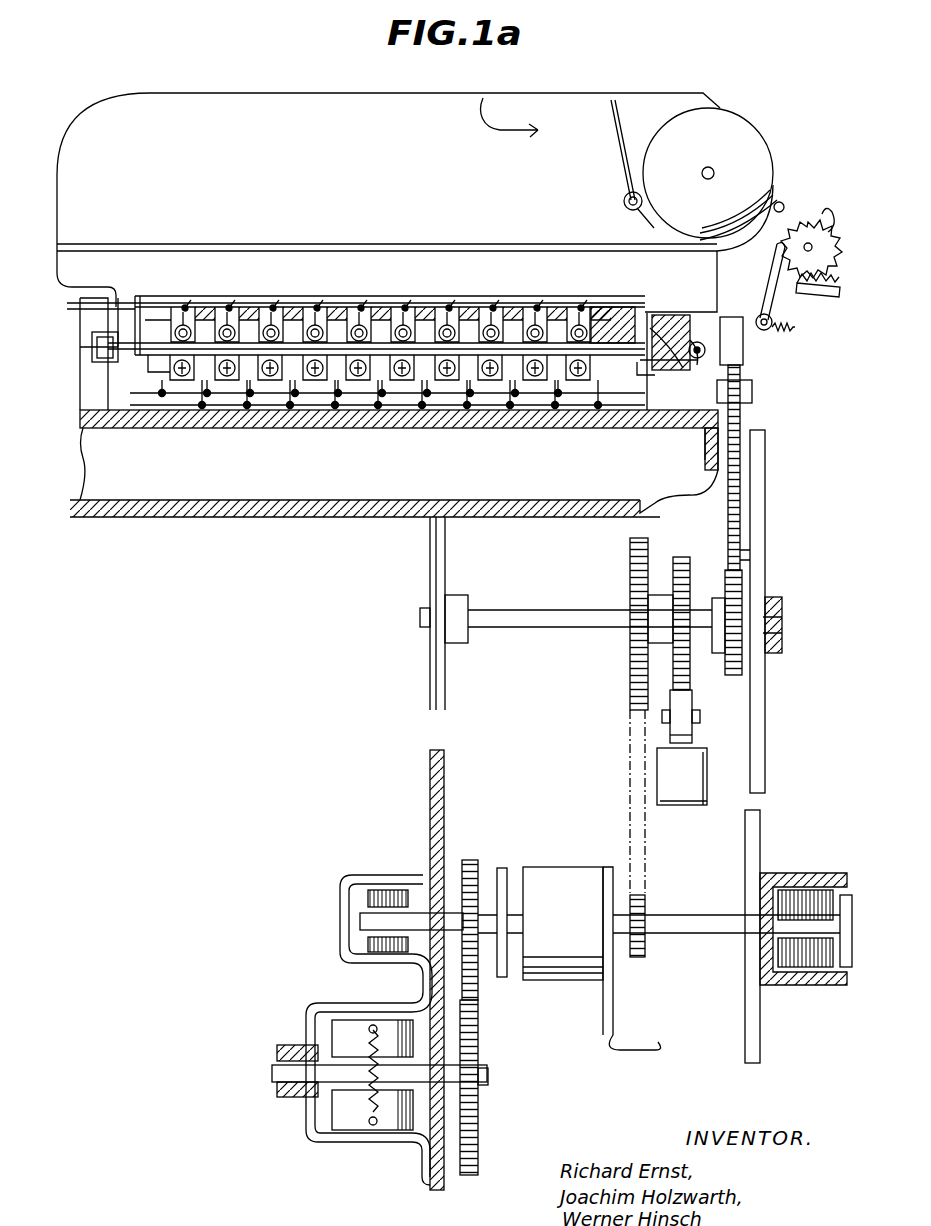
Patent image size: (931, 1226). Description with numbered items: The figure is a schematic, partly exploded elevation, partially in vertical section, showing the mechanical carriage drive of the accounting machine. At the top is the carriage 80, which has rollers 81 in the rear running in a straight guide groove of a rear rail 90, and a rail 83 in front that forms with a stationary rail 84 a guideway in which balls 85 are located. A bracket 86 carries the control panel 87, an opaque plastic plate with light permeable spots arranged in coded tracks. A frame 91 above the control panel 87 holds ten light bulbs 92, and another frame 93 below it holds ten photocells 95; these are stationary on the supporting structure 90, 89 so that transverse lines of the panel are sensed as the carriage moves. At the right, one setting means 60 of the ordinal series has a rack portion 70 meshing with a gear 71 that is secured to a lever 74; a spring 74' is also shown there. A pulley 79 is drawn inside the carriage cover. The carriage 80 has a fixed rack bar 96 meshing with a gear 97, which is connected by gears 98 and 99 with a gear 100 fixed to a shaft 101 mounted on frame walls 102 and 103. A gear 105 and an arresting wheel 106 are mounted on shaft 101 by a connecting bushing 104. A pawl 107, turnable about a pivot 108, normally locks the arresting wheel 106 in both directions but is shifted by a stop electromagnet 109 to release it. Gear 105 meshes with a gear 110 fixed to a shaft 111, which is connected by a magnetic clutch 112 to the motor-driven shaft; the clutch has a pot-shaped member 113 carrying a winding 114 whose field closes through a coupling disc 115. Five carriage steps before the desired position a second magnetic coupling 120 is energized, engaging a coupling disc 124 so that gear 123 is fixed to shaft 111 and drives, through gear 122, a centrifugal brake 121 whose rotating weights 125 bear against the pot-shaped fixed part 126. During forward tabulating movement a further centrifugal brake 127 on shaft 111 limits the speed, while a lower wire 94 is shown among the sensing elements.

The setting means 60 is at (838, 295).
The rack portion 70 is at (831, 263).
The gear 71 is at (823, 213).
The lever 74 is at (758, 281).
The spring 74' is at (803, 330).
The pulley 79 is at (767, 140).
The carriage 80 is at (294, 96).
The rollers 81 is at (92, 348).
The rail 83 is at (760, 284).
The stationary rail 84 is at (695, 410).
The balls 85 is at (690, 353).
The bracket 86 is at (648, 313).
The control panel 87 is at (422, 330).
The supporting structure 89 is at (672, 318).
The rear rail 90 is at (88, 385).
The frame 91 is at (254, 325).
The light bulbs 92 is at (95, 316).
The frame 93 is at (153, 386).
The lower contact 94 is at (222, 386).
The photocells 95 is at (268, 386).
The rack bar 96 is at (745, 352).
The gear 97 is at (752, 392).
The gear 98 is at (766, 480).
The gear 99 is at (745, 560).
The gear 100 is at (745, 672).
The shaft 101 is at (780, 626).
The frame wall 102 is at (764, 795).
The frame wall 103 is at (430, 716).
The connecting bushing 104 is at (650, 627).
The gear 105 is at (630, 568).
The arresting wheel 106 is at (683, 557).
The pawl 107 is at (693, 701).
The pivot 108 is at (700, 719).
The stop electromagnet 109 is at (690, 797).
The gear 110 is at (648, 899).
The shaft 111 is at (696, 936).
The magnetic clutch 112 is at (798, 866).
The pot-shaped member 113 is at (822, 986).
The winding 114 is at (793, 986).
The coupling disc 115 is at (846, 894).
The magnetic coupling 120 is at (565, 868).
The centrifugal brake 121 is at (365, 1152).
The gear 122 is at (480, 1116).
The gear 123 is at (480, 966).
The coupling disc 124 is at (500, 868).
The rotating weights 125 is at (336, 1020).
The pot-shaped fixed part 126 is at (302, 1122).
The centrifugal brake 127 is at (372, 876).